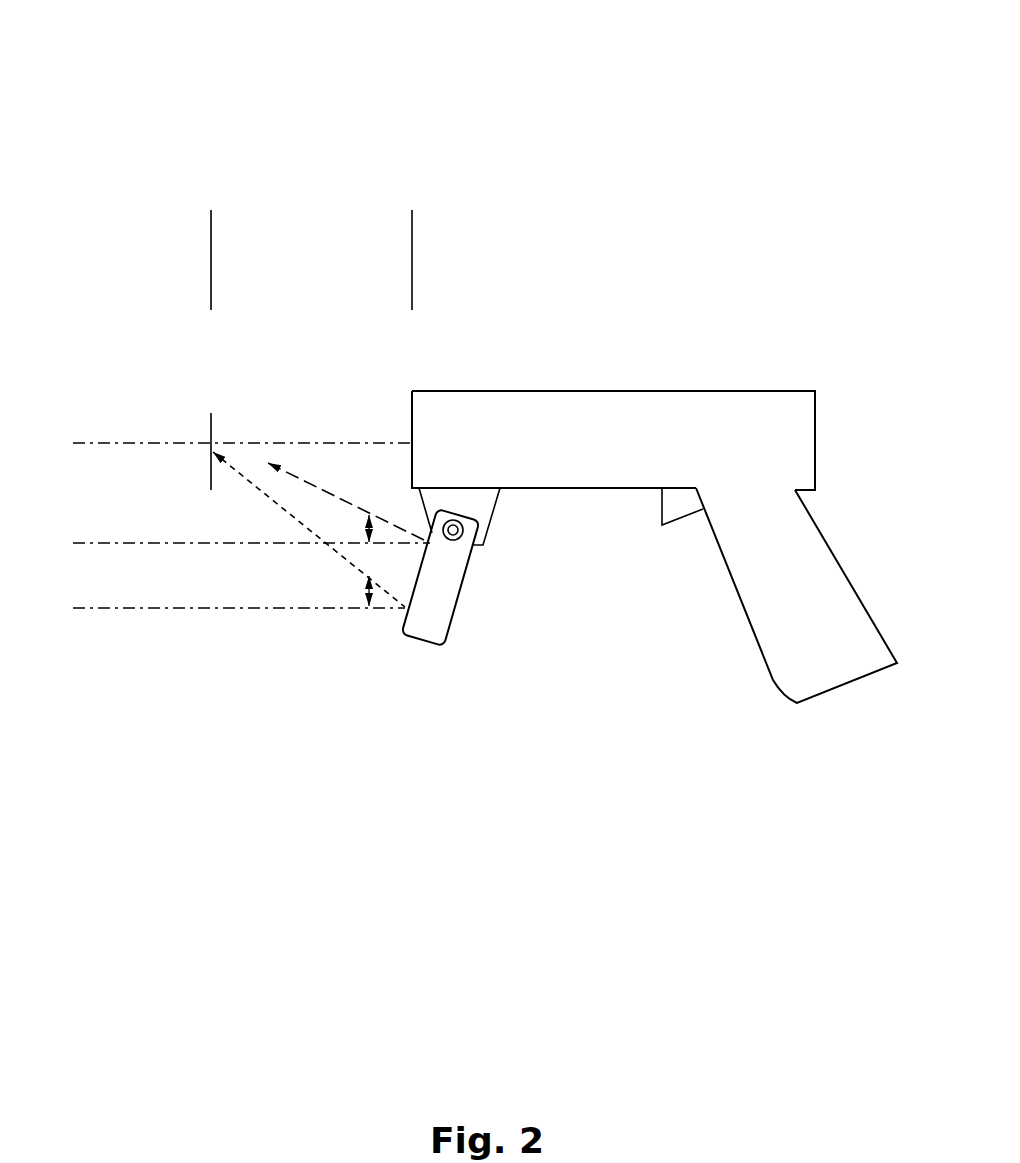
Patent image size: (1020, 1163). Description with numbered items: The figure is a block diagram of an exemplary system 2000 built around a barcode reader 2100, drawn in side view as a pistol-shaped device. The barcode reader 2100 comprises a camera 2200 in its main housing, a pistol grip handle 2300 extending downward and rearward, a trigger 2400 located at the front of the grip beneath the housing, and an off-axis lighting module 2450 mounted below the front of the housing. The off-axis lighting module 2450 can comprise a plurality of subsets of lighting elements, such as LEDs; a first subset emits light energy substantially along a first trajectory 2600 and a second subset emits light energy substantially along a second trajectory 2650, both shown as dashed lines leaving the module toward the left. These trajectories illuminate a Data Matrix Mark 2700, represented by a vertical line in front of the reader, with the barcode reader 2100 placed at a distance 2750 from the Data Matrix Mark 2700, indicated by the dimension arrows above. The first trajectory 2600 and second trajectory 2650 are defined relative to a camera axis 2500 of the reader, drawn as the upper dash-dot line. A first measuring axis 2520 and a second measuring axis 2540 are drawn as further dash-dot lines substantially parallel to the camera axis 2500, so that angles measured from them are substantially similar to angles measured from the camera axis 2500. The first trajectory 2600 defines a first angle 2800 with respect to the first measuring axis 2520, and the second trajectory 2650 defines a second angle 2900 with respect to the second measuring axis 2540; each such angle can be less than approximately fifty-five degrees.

The system 2000 is at (367, 40).
The barcode reader 2100 is at (658, 391).
The camera 2200 is at (545, 418).
The pistol grip handle 2300 is at (789, 569).
The trigger 2400 is at (679, 502).
The off-axis lighting module 2450 is at (423, 645).
The camera axis 2500 is at (78, 440).
The first measuring axis 2520 is at (103, 541).
The second measuring axis 2540 is at (123, 610).
The first trajectory 2600 is at (335, 491).
The second trajectory 2650 is at (250, 477).
The Data Matrix Mark 2700 is at (210, 432).
The distance 2750 is at (411, 250).
The first angle 2800 is at (360, 527).
The second angle 2900 is at (360, 592).